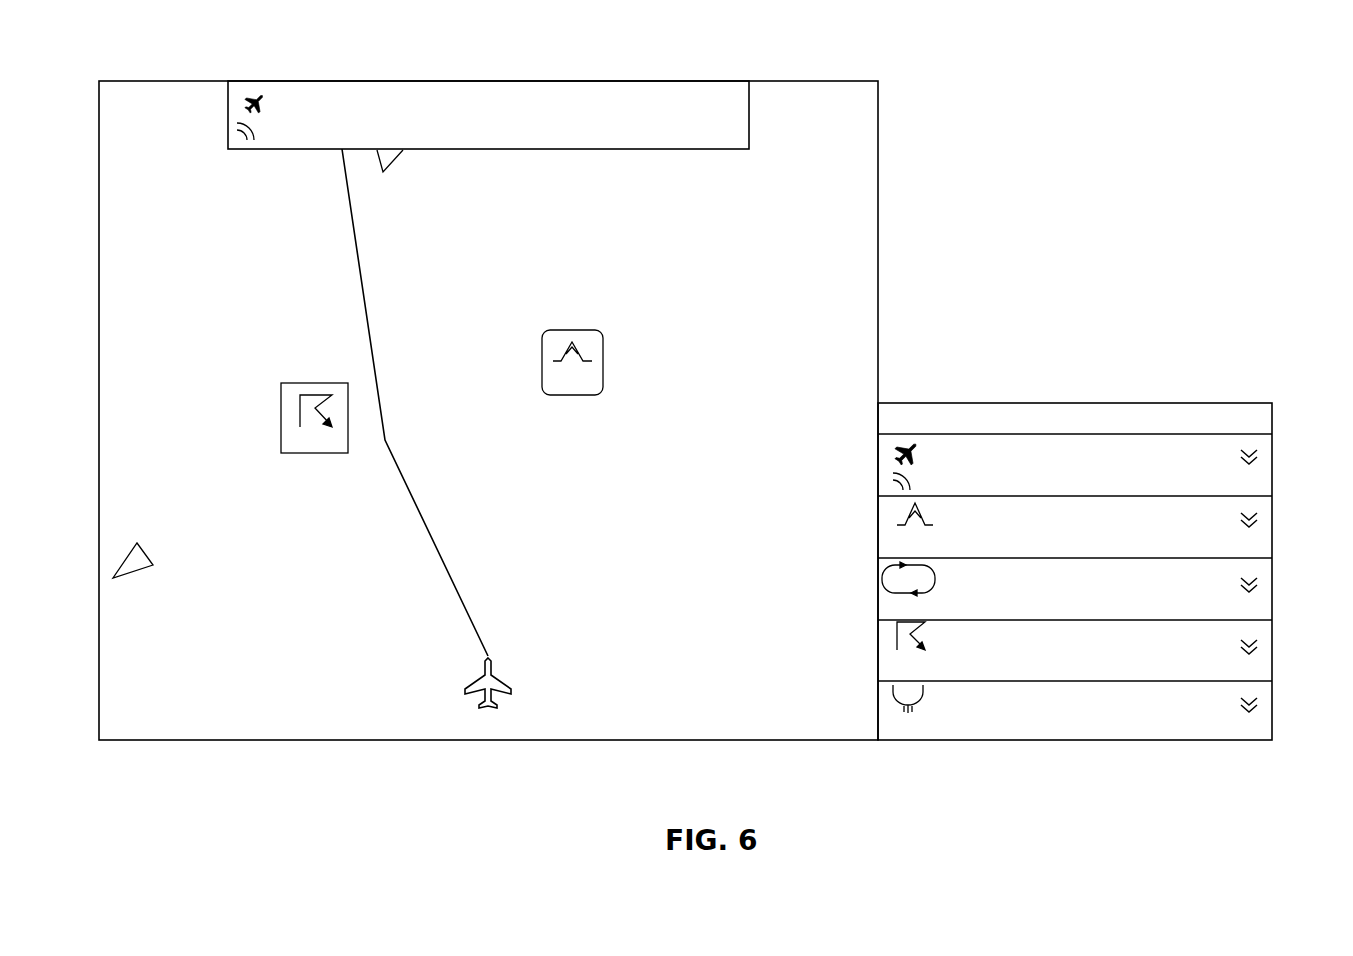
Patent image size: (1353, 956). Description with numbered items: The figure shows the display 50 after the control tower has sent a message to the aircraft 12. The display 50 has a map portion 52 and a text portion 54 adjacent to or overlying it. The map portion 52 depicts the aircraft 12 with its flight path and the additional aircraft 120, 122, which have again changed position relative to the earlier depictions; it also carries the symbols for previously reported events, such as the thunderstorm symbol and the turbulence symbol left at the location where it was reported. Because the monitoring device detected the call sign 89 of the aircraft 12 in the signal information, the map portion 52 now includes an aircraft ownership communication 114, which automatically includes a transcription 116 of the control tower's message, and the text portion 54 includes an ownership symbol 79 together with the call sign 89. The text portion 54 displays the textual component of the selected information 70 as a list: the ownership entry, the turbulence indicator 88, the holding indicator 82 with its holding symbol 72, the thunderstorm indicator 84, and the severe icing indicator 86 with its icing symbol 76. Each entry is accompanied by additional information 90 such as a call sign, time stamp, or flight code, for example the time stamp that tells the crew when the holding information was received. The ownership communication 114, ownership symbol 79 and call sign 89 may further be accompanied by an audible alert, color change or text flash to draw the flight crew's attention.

The aircraft 12 is at (488, 710).
The display 50 is at (972, 154).
The map portion 52 is at (833, 81).
The text portion 54 is at (1197, 403).
The selected information 70 is at (1284, 541).
The holding symbol 72 is at (882, 578).
The icing symbol 76 is at (885, 706).
The ownership symbol 79 is at (885, 462).
The holding indicator 82 is at (1013, 578).
The thunderstorm indicator 84 is at (1013, 663).
The severe icing indicator 86 is at (990, 730).
The turbulence indicator 88 is at (1007, 522).
The call sign 89 is at (1092, 440).
The additional information 90 is at (1239, 744).
The aircraft ownership communication 114 is at (508, 82).
The transcription 116 is at (740, 92).
The additional aircraft 120 is at (120, 562).
The additional aircraft 122 is at (385, 172).